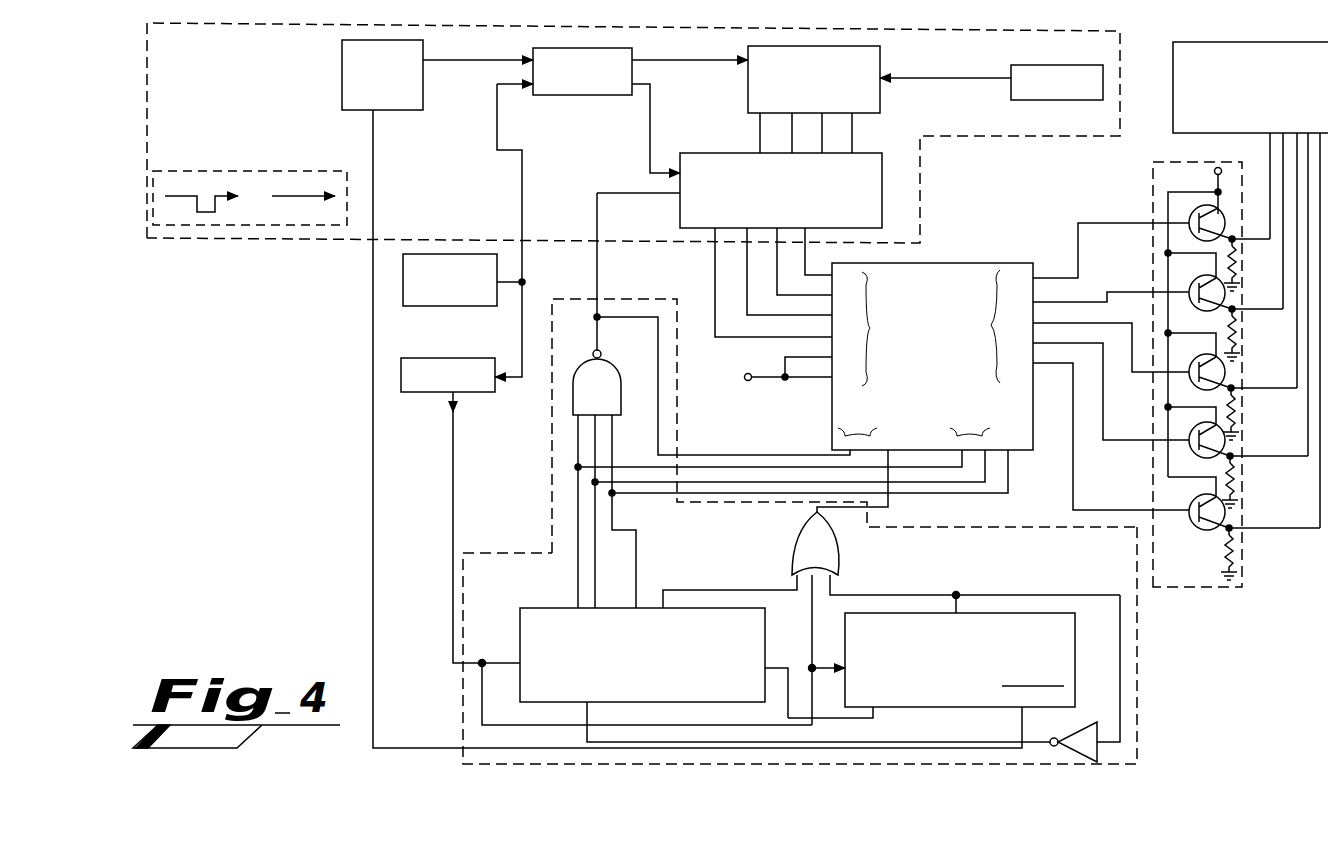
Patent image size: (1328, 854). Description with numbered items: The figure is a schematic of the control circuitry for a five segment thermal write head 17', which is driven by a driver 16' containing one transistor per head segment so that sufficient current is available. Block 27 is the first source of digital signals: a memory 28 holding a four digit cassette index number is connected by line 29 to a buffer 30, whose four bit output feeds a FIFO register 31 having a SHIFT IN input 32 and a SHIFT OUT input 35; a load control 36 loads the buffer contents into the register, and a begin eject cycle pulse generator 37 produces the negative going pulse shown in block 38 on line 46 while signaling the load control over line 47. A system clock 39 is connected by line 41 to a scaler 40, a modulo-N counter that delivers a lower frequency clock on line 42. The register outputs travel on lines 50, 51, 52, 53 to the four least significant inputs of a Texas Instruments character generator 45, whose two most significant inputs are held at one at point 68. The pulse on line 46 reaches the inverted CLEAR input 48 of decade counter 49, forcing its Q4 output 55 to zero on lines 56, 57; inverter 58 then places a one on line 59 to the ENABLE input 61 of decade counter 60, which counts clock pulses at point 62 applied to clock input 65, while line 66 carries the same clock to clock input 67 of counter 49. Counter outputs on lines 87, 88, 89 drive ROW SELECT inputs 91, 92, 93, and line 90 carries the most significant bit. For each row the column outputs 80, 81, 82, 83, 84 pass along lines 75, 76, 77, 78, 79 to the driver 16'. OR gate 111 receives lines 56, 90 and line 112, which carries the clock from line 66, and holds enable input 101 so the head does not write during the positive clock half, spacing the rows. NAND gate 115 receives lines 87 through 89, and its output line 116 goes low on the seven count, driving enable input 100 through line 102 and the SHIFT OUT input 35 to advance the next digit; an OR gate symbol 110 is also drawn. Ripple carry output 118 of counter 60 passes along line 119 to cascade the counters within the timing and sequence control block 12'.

The timing and sequence control block 12' is at (824, 645).
The driver 16' is at (1168, 369).
The thermal write head 17' is at (1230, 285).
The block of first source of digital signals 27 is at (1005, 138).
The memory 28 is at (1022, 64).
The line 29 is at (942, 80).
The buffer 30 is at (882, 62).
The FIFO register 31 is at (882, 192).
The SHIFT IN input 32 is at (668, 178).
The SHIFT OUT input 35 is at (672, 200).
The load control 36 is at (570, 97).
The begin eject cycle pulse generator 37 is at (342, 60).
The block showing negative going pulse 38 is at (224, 170).
The system clock 39 is at (440, 308).
The scaler 40 is at (418, 393).
The line 41 is at (520, 322).
The line 42 is at (455, 478).
The character generator 45 is at (938, 262).
The line 46 is at (360, 455).
The line 47 is at (496, 58).
The inverted CLEAR input 48 is at (1018, 712).
The decade counter 49 is at (1075, 652).
The line 50 is at (806, 262).
The line 51 is at (778, 276).
The line 52 is at (748, 282).
The line 53 is at (713, 282).
The Q4 output 55 is at (962, 602).
The line 56 is at (935, 590).
The line 57 is at (1137, 730).
The inverter 58 is at (1092, 720).
The line 59 is at (1032, 738).
The decade counter 60 is at (520, 618).
The ENABLE input 61 is at (590, 708).
The point 62 is at (487, 675).
The clock input 65 is at (518, 660).
The line 66 is at (692, 724).
The clock input 67 is at (845, 665).
The point 68 is at (748, 372).
The line 75 is at (1112, 220).
The line 76 is at (1132, 282).
The line 77 is at (1136, 376).
The line 78 is at (1115, 445).
The line 79 is at (1073, 505).
The column output 80 is at (1048, 272).
The column output 81 is at (1045, 300).
The column output 82 is at (1045, 318).
The column output 83 is at (1045, 348).
The column output 84 is at (1040, 370).
The line 87 is at (577, 590).
The line 88 is at (612, 582).
The line 89 is at (640, 578).
The line 90 is at (740, 588).
The ROW SELECT input 91 is at (968, 485).
The ROW SELECT input 92 is at (998, 488).
The ROW SELECT input 93 is at (1015, 460).
The enable input 100 is at (845, 452).
The enable input 101 is at (895, 458).
The line 102 is at (680, 415).
The OR gate 110 is at (852, 505).
The OR gate 111 is at (792, 545).
The line 112 is at (811, 610).
The NAND gate 115 is at (624, 378).
The line 116 is at (596, 263).
The ripple carry output 118 is at (768, 665).
The line 119 is at (875, 725).